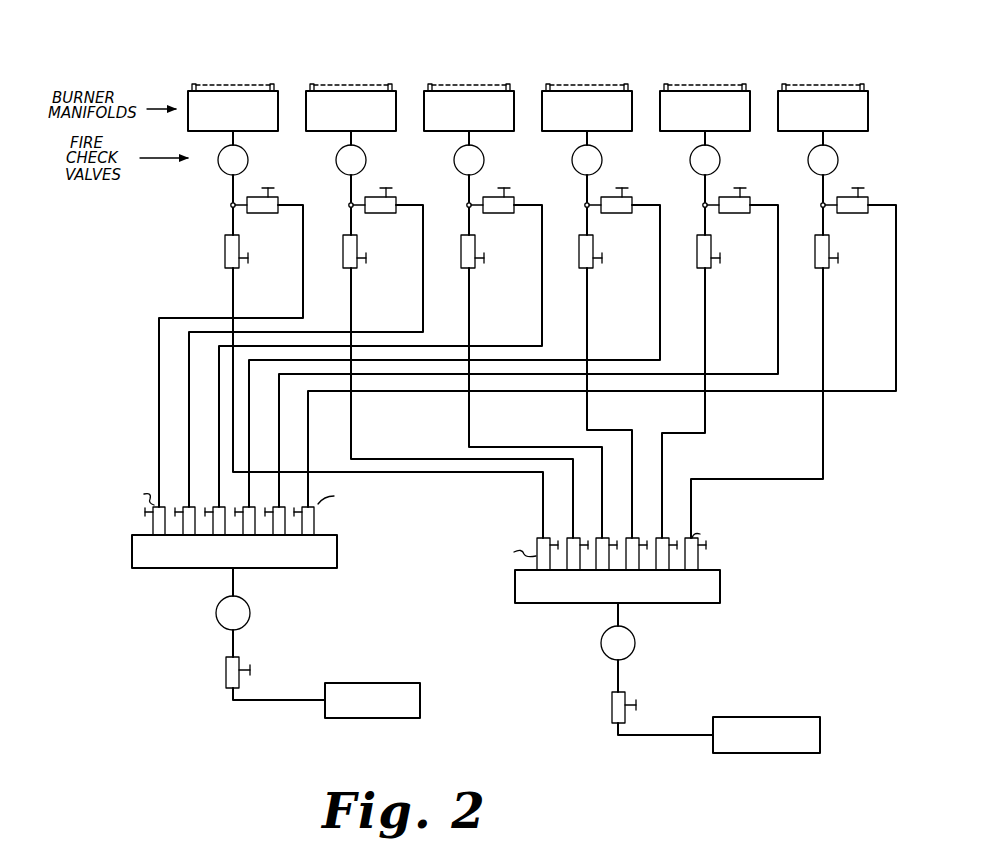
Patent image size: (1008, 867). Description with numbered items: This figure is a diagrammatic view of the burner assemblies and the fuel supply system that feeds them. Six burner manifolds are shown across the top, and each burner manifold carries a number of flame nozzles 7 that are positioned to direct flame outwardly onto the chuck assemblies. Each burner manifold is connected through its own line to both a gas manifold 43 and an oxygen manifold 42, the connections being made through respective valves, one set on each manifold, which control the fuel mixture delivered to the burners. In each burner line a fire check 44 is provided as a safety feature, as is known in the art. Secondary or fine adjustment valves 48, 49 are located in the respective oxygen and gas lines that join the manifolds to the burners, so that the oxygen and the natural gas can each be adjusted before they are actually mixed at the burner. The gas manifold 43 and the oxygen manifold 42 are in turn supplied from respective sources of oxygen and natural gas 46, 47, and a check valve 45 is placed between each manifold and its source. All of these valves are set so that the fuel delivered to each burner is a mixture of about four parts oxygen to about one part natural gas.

The flame nozzles 7 is at (200, 74).
The fire checks 44 is at (206, 168).
The secondary or fine adjustment valve 48 is at (272, 215).
The secondary or fine adjustment valve 49 is at (225, 252).
The gas manifold 43 is at (340, 553).
The oxygen manifold 42 is at (722, 586).
The check valve 45 is at (251, 613).
The source of oxygen 46 is at (421, 684).
The source of natural gas 47 is at (820, 717).